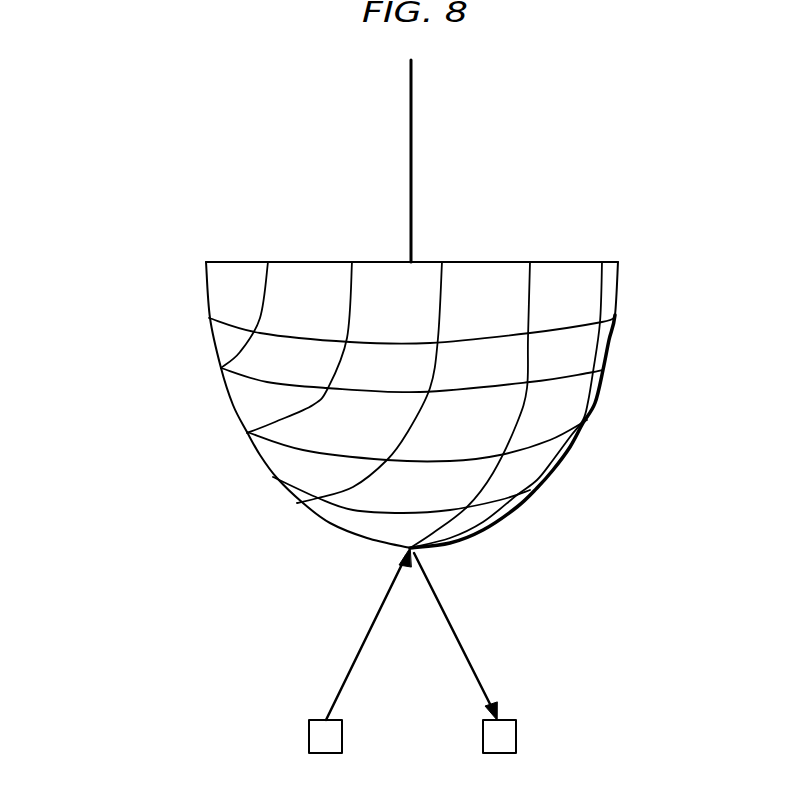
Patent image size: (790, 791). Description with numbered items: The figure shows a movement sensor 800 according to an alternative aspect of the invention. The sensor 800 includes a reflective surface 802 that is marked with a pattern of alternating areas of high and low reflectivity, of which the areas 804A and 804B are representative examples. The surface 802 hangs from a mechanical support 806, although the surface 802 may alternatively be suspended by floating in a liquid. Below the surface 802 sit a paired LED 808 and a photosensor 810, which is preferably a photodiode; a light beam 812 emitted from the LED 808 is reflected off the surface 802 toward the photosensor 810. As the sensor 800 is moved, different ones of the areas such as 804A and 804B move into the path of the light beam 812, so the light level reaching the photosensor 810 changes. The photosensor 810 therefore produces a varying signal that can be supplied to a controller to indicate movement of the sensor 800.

The movement sensor 800 is at (200, 128).
The reflective surface 802 is at (217, 355).
The area of high or low reflectivity 804A is at (350, 534).
The area of high or low reflectivity 804B is at (490, 528).
The mechanical support 806 is at (411, 107).
The LED 808 is at (309, 740).
The photosensor 810 is at (516, 737).
The light beam 812 is at (353, 668).